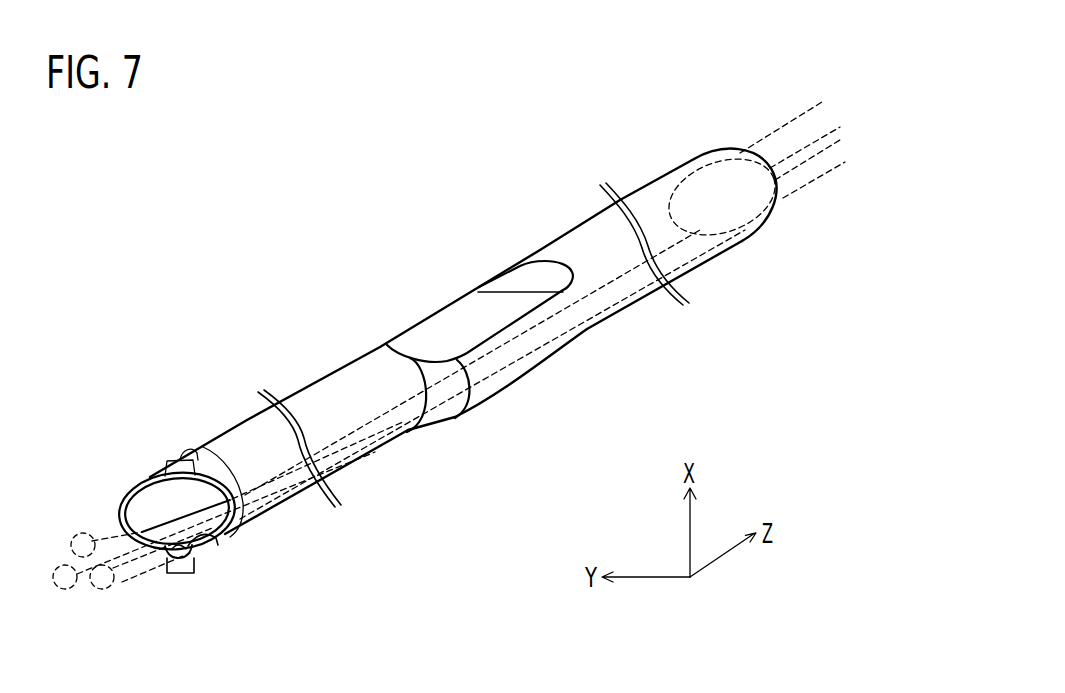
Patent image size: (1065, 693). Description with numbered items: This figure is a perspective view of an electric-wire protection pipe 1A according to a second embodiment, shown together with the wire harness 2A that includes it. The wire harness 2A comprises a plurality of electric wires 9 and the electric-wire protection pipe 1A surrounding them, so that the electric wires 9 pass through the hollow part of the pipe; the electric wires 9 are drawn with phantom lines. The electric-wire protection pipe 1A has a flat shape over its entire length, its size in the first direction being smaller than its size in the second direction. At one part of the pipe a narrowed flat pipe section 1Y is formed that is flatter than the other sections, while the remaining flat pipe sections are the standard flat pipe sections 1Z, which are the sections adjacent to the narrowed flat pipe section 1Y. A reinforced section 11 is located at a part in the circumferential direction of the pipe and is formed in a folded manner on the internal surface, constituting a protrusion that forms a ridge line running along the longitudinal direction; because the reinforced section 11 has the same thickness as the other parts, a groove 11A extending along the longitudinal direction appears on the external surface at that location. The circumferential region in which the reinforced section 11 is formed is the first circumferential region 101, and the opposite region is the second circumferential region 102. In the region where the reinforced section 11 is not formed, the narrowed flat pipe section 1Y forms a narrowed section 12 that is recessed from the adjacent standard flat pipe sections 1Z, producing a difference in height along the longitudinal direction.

The electric-wire protection pipe 1A is at (148, 435).
The wire harness 2A is at (704, 329).
The electric wires 9 is at (77, 587).
The reinforced section 11 is at (231, 541).
The groove 11A is at (194, 559).
The narrowed section 12 is at (451, 323).
The first circumferential region 101 is at (181, 571).
The second circumferential region 102 is at (257, 510).
The narrowed flat pipe section 1Y is at (517, 383).
The standard flat pipe sections 1Z is at (362, 458).